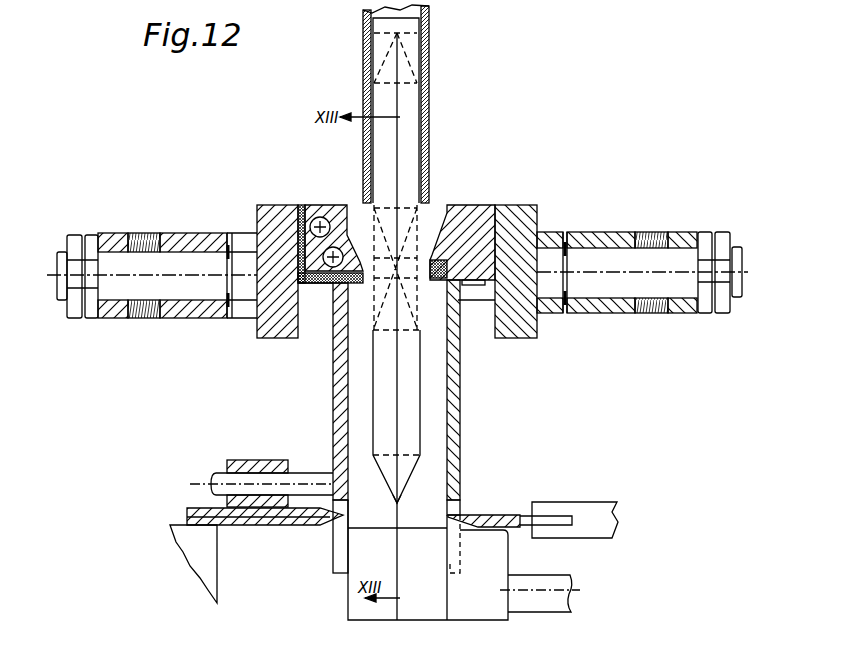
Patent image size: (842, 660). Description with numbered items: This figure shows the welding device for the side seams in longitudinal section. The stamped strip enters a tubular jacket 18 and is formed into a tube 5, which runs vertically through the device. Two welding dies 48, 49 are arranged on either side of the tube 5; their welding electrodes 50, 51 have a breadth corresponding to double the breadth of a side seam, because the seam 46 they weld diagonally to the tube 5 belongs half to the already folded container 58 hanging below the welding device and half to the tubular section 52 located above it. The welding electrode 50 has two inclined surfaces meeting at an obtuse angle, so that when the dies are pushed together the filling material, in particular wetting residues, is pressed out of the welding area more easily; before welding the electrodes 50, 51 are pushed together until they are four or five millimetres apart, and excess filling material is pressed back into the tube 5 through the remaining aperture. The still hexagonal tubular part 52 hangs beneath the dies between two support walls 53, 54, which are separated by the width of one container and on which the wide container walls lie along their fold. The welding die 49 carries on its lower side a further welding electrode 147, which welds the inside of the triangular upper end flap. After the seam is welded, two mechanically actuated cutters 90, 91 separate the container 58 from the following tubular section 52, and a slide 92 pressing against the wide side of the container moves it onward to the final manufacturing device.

The tubular jacket 18 is at (430, 119).
The tube 5 is at (412, 170).
The welding die 48 is at (314, 206).
The welding die 49 is at (476, 206).
The welding electrode 50 is at (363, 275).
The welding electrode 51 is at (430, 271).
The welding electrode 147 is at (475, 287).
The support wall 53 is at (343, 407).
The support wall 54 is at (455, 407).
The tubular section 52 is at (415, 432).
The seam 46 is at (399, 505).
The container 58 is at (352, 603).
The slide 92 is at (498, 613).
The cutter 91 is at (497, 518).
The cutter 90 is at (303, 518).